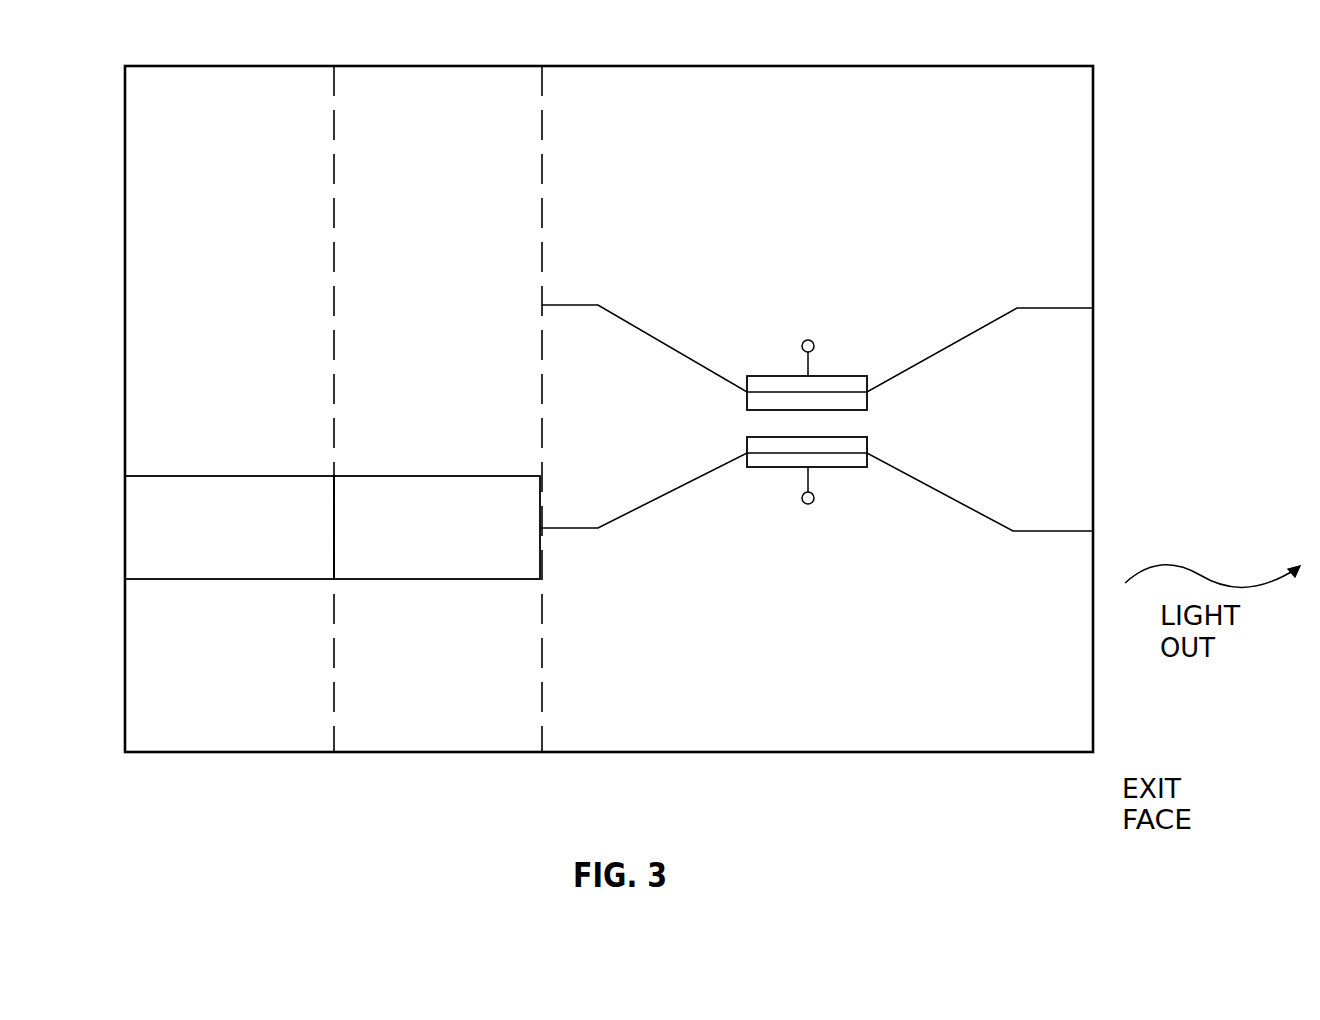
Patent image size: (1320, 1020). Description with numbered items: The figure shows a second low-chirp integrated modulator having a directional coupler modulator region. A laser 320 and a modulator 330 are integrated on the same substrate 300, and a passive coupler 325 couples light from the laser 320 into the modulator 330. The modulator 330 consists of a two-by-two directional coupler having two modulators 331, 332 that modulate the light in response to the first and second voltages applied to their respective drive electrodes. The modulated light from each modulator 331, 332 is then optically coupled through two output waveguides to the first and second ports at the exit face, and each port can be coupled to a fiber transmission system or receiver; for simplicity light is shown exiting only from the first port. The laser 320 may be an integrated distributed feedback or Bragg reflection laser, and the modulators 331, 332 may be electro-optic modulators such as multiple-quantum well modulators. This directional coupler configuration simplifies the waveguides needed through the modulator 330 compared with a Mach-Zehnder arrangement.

The substrate 300 is at (259, 752).
The laser 320 is at (220, 568).
The passive coupler 325 is at (419, 486).
The modulator 330 is at (1009, 120).
The modulator 331 is at (747, 443).
The modulator 332 is at (747, 399).